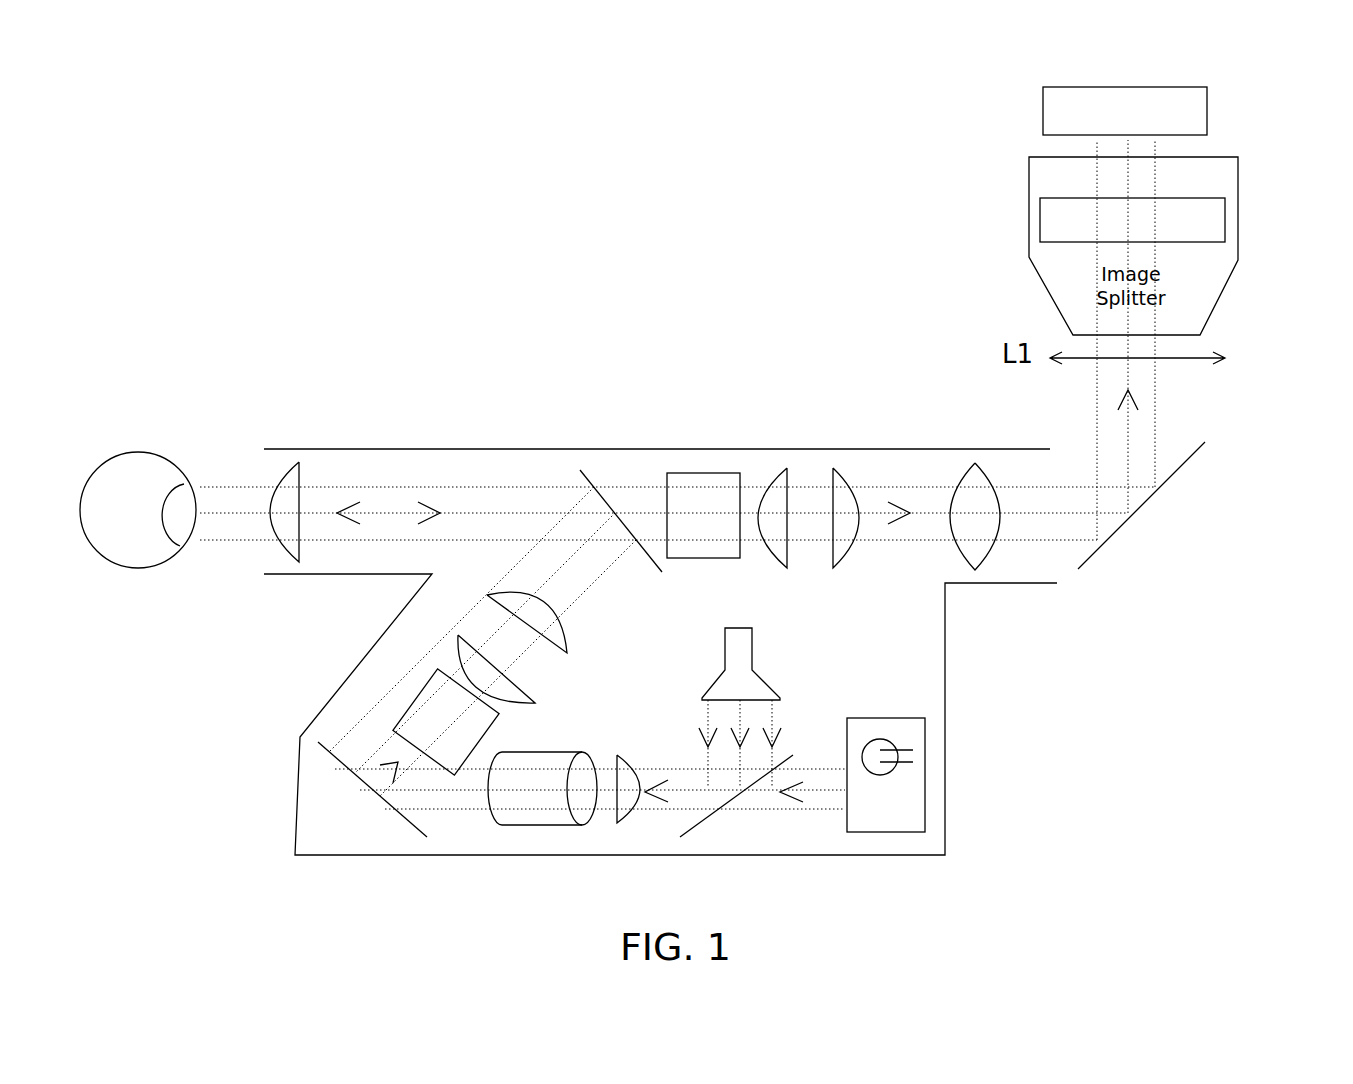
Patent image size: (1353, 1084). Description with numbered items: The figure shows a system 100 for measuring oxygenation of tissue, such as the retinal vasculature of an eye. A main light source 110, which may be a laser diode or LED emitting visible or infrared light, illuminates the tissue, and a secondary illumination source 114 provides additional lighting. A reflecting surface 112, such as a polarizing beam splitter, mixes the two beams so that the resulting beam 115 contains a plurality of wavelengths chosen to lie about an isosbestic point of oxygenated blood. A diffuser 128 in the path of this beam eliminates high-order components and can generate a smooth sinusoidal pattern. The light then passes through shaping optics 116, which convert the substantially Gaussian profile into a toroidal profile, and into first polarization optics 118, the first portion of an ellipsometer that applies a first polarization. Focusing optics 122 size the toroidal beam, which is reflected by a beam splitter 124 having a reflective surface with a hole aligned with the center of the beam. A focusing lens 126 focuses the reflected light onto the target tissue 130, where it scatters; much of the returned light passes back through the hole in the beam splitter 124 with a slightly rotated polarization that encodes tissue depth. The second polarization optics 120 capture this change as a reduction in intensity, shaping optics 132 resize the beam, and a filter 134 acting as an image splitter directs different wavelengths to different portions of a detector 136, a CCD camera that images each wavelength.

The system 100 is at (582, 80).
The main light source 110 is at (928, 778).
The reflecting surface 112 is at (787, 763).
The secondary illumination source 114 is at (740, 638).
The resulting beam 115 is at (733, 797).
The shaping optics 116 is at (533, 750).
The first polarization optics 118 is at (407, 702).
The second polarization optics 120 is at (698, 472).
The focusing optics 122 is at (540, 598).
The beam splitter 124 is at (592, 478).
The focusing lens 126 is at (292, 480).
The diffuser 128 is at (615, 757).
The target tissue 130 is at (170, 452).
The shaping optics 132 is at (840, 472).
The filter 134 is at (1225, 222).
The detector 136 is at (1207, 93).